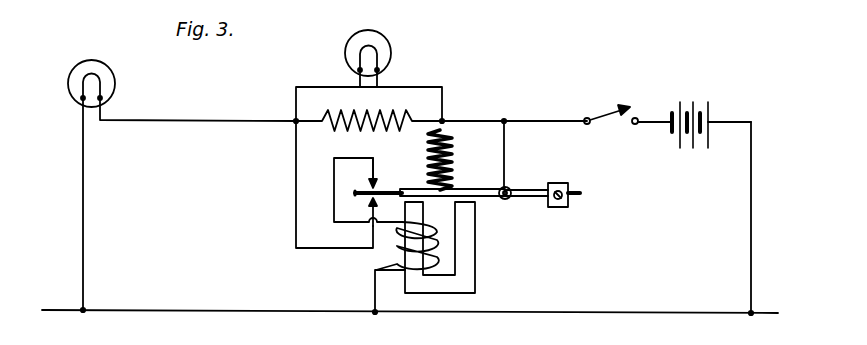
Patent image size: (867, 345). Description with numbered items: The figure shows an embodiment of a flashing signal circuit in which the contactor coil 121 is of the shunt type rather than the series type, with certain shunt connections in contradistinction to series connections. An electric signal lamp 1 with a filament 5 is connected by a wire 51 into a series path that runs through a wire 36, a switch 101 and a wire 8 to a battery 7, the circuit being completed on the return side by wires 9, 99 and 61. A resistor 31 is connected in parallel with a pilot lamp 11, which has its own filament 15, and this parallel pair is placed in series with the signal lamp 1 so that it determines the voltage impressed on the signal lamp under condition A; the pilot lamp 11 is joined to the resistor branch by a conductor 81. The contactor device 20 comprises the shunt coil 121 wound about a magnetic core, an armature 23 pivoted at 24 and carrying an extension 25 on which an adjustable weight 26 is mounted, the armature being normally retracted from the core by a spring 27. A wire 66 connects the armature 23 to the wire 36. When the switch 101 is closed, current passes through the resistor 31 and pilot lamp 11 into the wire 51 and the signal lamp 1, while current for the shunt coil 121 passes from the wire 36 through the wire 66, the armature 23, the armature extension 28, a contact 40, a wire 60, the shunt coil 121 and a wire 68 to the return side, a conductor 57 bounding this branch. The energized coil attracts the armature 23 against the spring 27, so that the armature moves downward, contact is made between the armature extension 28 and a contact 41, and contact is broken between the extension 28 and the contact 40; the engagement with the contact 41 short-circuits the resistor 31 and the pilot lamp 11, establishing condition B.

The signal lamp 1 is at (86, 60).
The filament 5 is at (101, 81).
The wire 51 is at (148, 120).
The wire 61 is at (84, 248).
The conductor 57 is at (297, 251).
The wire 60 is at (333, 188).
The pilot lamp 11 is at (352, 37).
The lamp filament 15 is at (359, 53).
The conductor 81 is at (412, 86).
The resistor 31 is at (346, 126).
The wire 36 is at (478, 119).
The switch 101 is at (614, 110).
The wire 8 is at (655, 125).
The battery 7 is at (697, 106).
The wire 9 is at (752, 190).
The wire 99 is at (611, 311).
The wire 66 is at (506, 160).
The spring 27 is at (454, 160).
The armature 23 is at (402, 189).
The armature extension 28 is at (358, 191).
The contact 40 is at (380, 176).
The contact 41 is at (369, 200).
The pivot 24 is at (507, 200).
The adjustable weight 26 is at (560, 208).
The extension 25 is at (581, 193).
The contactor device 20 is at (444, 250).
The shunt coil 121 is at (396, 263).
The wire 68 is at (375, 292).